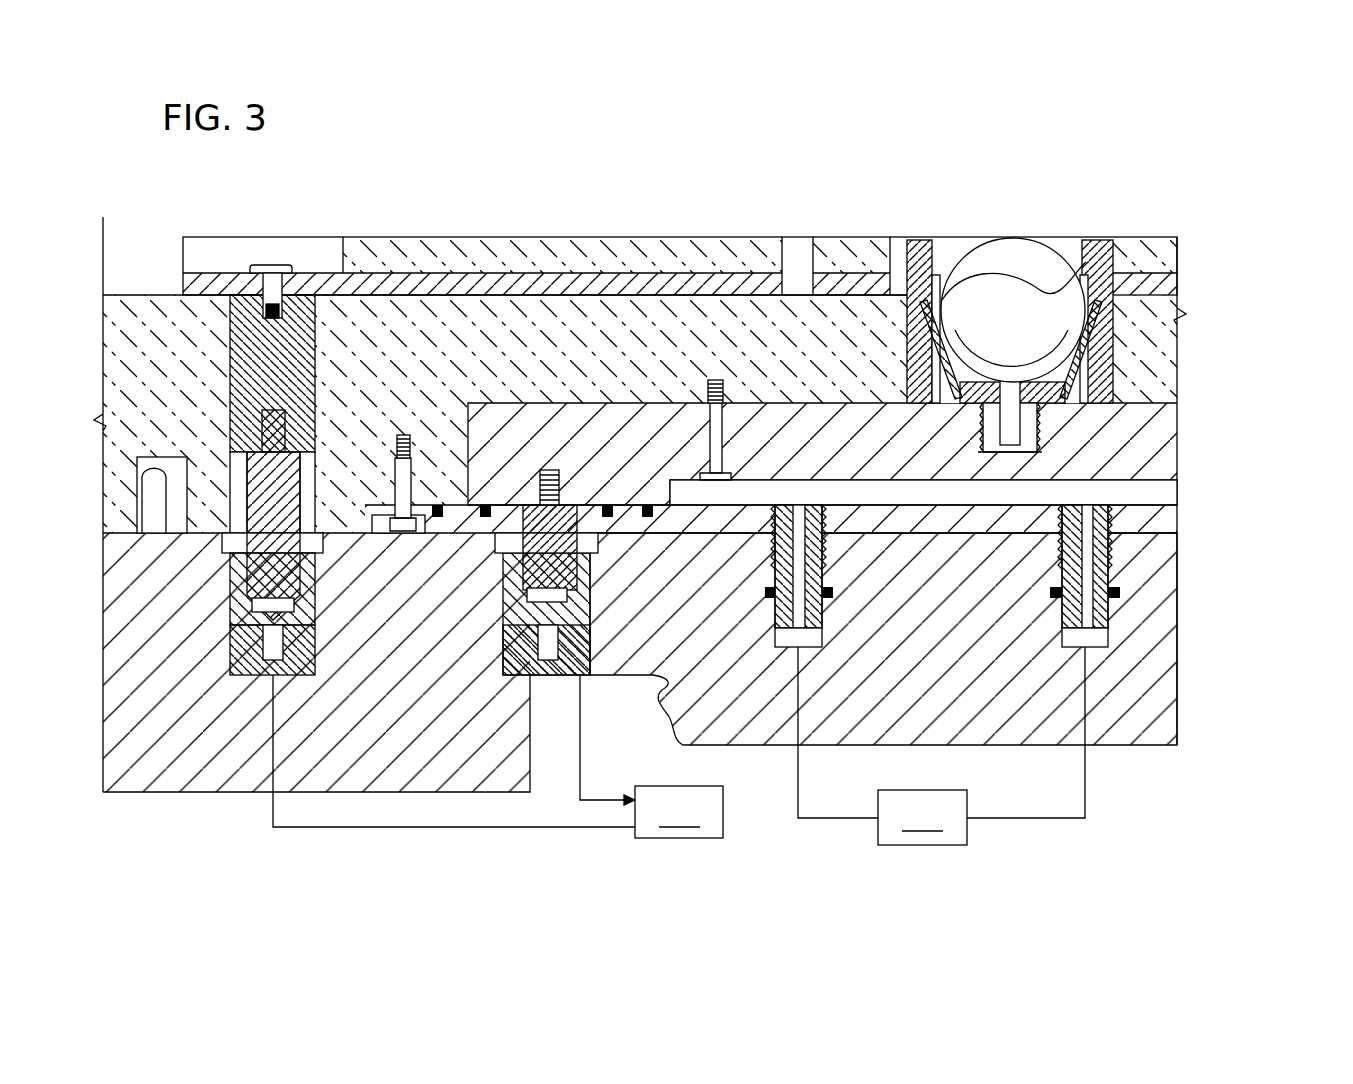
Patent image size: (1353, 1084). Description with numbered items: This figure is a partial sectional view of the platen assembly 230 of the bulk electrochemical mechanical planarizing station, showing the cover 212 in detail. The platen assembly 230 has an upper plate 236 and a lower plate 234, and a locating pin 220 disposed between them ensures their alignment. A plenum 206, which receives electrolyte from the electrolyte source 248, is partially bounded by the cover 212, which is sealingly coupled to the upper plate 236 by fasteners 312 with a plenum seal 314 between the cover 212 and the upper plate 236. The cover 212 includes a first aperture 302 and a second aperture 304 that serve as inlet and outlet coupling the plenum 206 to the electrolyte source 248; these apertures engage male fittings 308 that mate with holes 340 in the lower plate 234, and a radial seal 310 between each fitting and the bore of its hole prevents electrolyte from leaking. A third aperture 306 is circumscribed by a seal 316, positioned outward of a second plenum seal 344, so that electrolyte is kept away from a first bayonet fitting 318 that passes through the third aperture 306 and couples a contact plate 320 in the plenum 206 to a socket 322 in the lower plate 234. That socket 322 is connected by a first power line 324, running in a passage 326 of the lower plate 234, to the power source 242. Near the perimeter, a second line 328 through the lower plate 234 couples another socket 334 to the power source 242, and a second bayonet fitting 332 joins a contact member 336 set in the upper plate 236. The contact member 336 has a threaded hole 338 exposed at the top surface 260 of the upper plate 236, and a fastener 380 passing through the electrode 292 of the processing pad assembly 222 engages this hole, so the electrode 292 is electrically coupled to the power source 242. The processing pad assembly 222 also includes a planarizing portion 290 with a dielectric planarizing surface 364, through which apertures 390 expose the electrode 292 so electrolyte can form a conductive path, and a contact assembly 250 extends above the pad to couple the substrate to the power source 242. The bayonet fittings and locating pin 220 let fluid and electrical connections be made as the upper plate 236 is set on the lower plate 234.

The plenum 206 is at (1150, 482).
The cover 212 is at (1170, 514).
The locating pin 220 is at (145, 500).
The processing pad assembly 222 is at (1148, 236).
The platen assembly 230 is at (1213, 553).
The lower plate 234 is at (1154, 688).
The upper plate 236 is at (1160, 355).
The power source 242 is at (679, 812).
The electrolyte source 248 is at (922, 817).
The contact assembly 250 is at (1006, 230).
The top surface 260 is at (103, 293).
The planarizing portion 290 is at (378, 237).
The electrode 292 is at (487, 290).
The first aperture 302 is at (742, 520).
The second aperture 304 is at (1060, 522).
The third aperture 306 is at (595, 520).
The male fitting 308 is at (818, 490).
The radial seal 310 is at (1122, 591).
The fastener 312 is at (403, 530).
The plenum seal 314 is at (437, 505).
The seal 316 is at (607, 505).
The first bayonet fitting 318 is at (490, 553).
The contact plate 320 is at (600, 425).
The socket 322 is at (592, 612).
The first power line 324 is at (598, 800).
The passage 326 is at (618, 664).
The second line 328 is at (413, 827).
The second bayonet fitting 332 is at (232, 600).
The socket 334 is at (317, 585).
The contact member 336 is at (232, 377).
The threaded hole 338 is at (268, 318).
The hole 340 is at (773, 640).
The second plenum seal 344 is at (647, 505).
The planarizing surface 364 is at (730, 237).
The fastener 380 is at (272, 266).
The aperture 390 is at (800, 260).